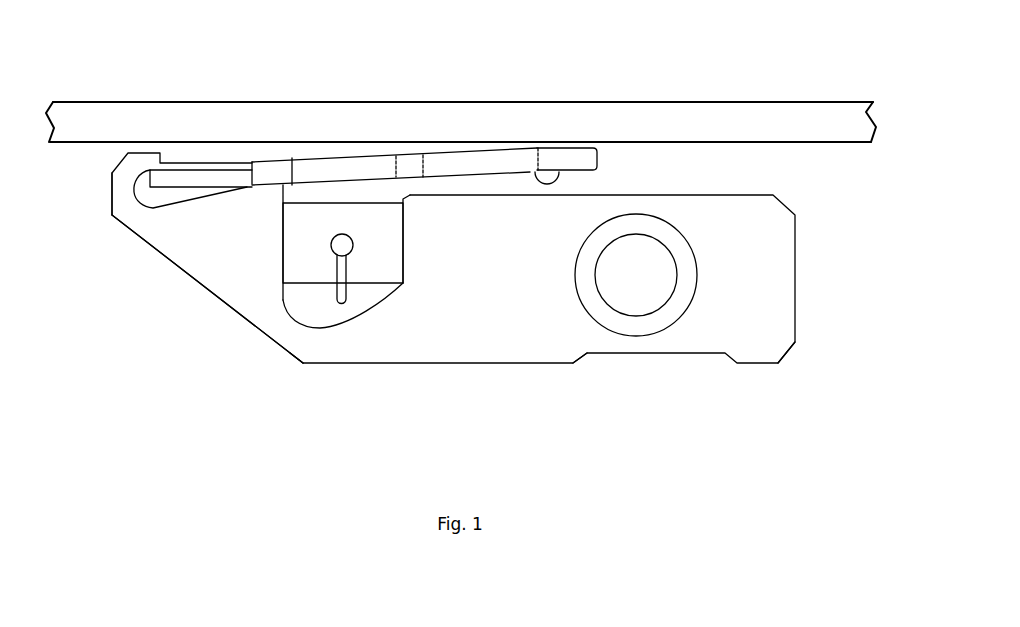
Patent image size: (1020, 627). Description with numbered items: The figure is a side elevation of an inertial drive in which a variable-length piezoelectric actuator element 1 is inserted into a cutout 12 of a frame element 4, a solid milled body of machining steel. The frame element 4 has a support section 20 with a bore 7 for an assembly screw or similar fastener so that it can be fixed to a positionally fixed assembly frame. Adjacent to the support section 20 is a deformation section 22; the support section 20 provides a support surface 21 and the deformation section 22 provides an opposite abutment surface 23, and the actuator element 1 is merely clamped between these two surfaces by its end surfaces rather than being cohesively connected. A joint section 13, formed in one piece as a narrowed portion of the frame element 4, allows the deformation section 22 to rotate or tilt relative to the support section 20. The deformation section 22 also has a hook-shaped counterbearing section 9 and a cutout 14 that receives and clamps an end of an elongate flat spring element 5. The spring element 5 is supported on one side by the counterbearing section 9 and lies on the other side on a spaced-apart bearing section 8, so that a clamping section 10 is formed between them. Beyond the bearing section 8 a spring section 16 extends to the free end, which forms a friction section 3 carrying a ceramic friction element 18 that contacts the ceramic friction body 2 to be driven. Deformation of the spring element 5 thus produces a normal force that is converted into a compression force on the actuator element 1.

The piezoelectric actuator element 1 is at (385, 263).
The friction body 2 is at (792, 125).
The friction section 3 is at (577, 146).
The frame element 4 is at (770, 338).
The spring element 5 is at (345, 165).
The bore 7 is at (697, 287).
The bearing section 8 is at (263, 195).
The counterbearing section 9 is at (140, 158).
The clamping section 10 is at (198, 162).
The cutout 12 is at (325, 313).
The joint section 13 is at (285, 330).
The cutout 14 is at (152, 200).
The spring section 16 is at (453, 148).
The friction element 18 is at (560, 173).
The support section 20 is at (582, 374).
The support surface 21 is at (397, 243).
The deformation section 22 is at (270, 363).
The abutment surface 23 is at (290, 243).